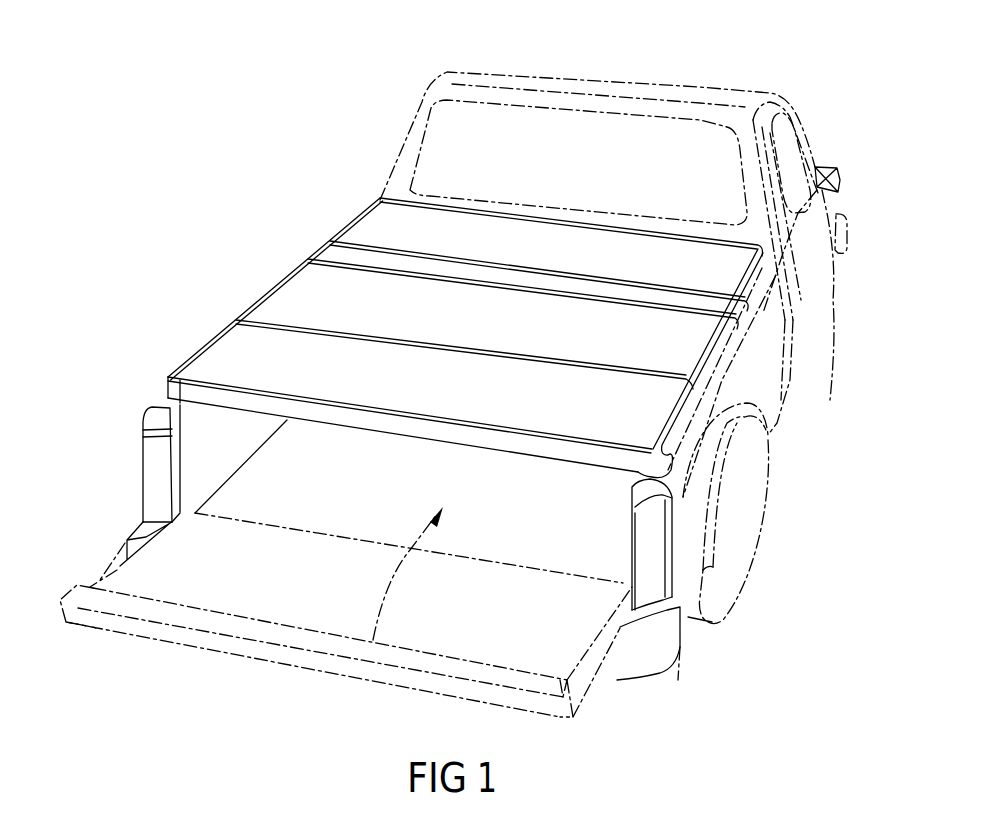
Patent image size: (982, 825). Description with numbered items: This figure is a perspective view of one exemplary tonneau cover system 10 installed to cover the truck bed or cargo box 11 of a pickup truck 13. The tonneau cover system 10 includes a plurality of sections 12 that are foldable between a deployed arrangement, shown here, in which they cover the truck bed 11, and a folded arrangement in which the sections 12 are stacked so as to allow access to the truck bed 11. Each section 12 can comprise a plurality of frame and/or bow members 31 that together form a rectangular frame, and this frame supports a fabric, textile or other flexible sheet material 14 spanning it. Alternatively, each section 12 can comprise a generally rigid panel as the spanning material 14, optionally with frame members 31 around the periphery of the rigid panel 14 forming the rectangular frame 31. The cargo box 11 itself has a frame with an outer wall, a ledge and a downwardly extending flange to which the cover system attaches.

The tonneau cover system 10 is at (222, 172).
The truck bed or cargo box 11 is at (388, 683).
The sections 12 is at (342, 215).
The pickup truck 13 is at (423, 90).
The flexible sheet material 14 is at (240, 338).
The frame and/or bow members 31 is at (163, 390).